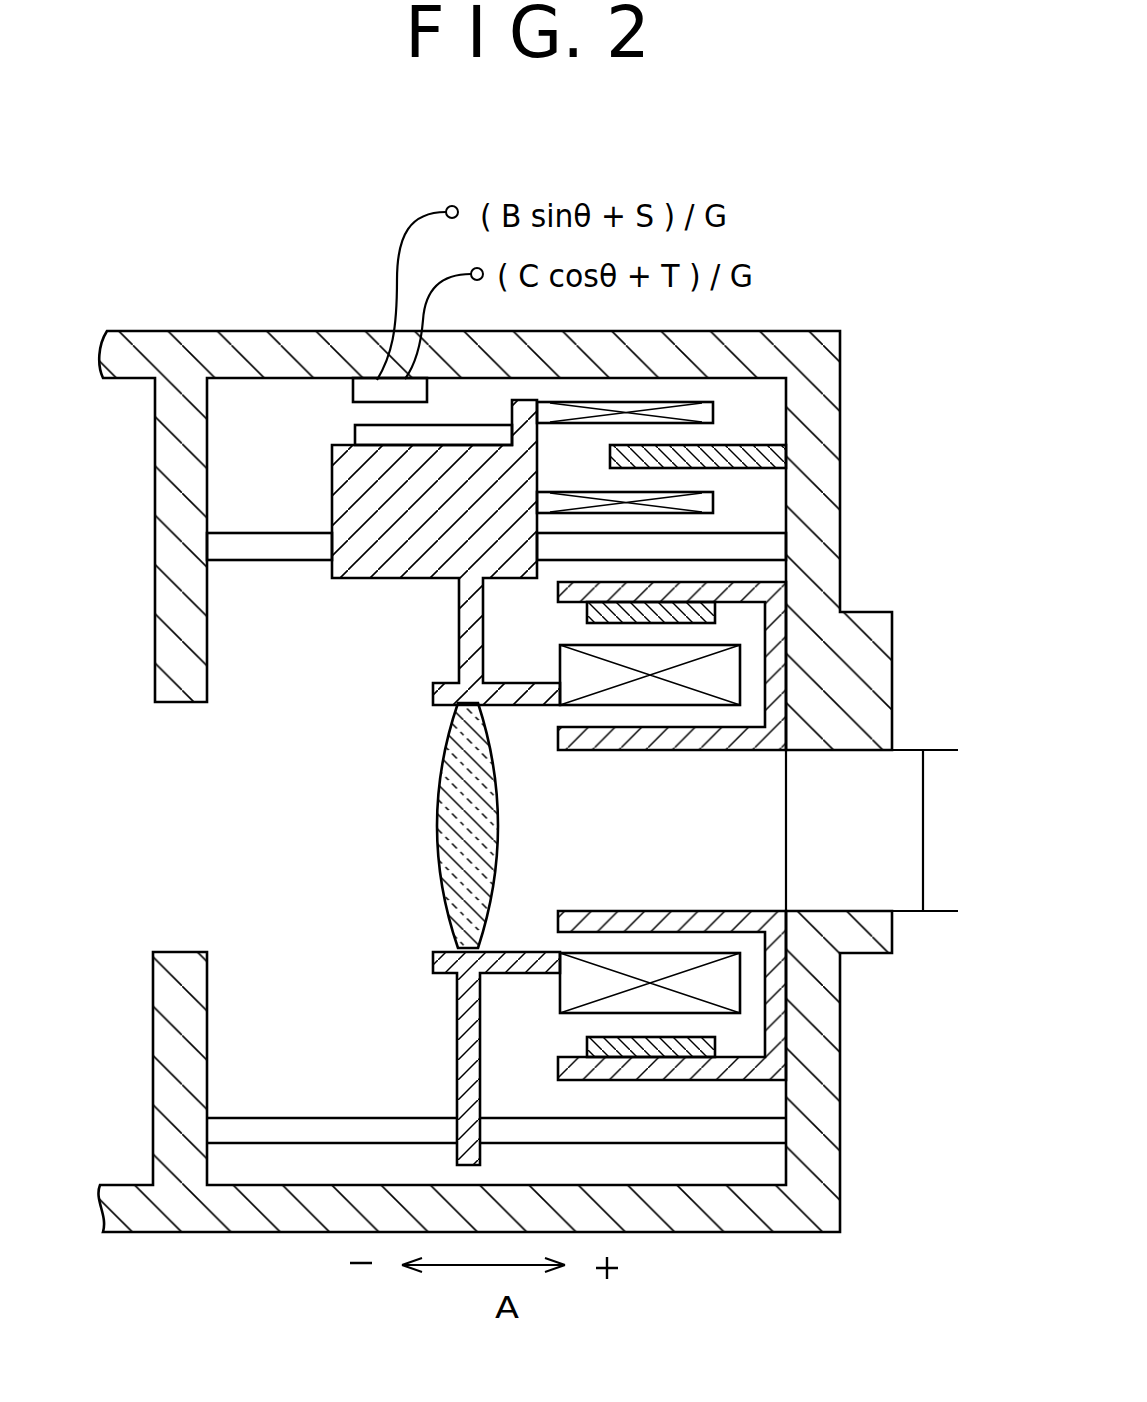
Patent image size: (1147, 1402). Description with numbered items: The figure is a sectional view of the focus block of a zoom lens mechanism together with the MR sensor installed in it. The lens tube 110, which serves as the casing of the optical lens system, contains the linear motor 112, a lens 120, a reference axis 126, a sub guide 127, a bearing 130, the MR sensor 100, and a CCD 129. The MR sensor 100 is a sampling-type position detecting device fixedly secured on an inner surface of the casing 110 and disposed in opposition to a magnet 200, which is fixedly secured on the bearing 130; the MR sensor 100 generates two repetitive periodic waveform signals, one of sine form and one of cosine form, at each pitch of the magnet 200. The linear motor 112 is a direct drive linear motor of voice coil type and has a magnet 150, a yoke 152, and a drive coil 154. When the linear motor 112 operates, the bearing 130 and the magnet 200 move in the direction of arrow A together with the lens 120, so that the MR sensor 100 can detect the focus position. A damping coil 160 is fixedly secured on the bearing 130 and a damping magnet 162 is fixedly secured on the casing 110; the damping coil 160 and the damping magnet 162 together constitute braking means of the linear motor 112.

The MR sensor 100 is at (367, 388).
The lens tube 110 is at (720, 1218).
The linear motor 112 is at (744, 631).
The lens 120 is at (435, 833).
The reference axis 126 is at (277, 548).
The sub guide 127 is at (359, 1130).
The CCD 129 is at (903, 888).
The bearing 130 is at (402, 582).
The magnet 150 is at (717, 1046).
The yoke 152 is at (670, 918).
The drive coil 154 is at (725, 994).
The damping coil 160 is at (715, 493).
The damping magnet 162 is at (742, 443).
The magnet 200 is at (362, 433).